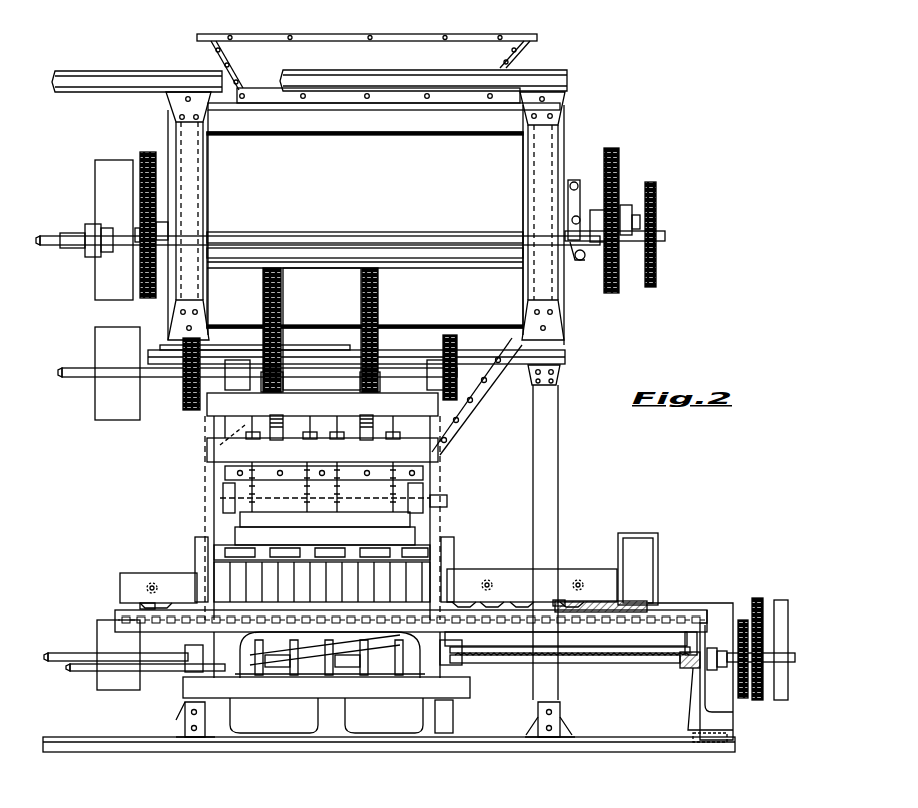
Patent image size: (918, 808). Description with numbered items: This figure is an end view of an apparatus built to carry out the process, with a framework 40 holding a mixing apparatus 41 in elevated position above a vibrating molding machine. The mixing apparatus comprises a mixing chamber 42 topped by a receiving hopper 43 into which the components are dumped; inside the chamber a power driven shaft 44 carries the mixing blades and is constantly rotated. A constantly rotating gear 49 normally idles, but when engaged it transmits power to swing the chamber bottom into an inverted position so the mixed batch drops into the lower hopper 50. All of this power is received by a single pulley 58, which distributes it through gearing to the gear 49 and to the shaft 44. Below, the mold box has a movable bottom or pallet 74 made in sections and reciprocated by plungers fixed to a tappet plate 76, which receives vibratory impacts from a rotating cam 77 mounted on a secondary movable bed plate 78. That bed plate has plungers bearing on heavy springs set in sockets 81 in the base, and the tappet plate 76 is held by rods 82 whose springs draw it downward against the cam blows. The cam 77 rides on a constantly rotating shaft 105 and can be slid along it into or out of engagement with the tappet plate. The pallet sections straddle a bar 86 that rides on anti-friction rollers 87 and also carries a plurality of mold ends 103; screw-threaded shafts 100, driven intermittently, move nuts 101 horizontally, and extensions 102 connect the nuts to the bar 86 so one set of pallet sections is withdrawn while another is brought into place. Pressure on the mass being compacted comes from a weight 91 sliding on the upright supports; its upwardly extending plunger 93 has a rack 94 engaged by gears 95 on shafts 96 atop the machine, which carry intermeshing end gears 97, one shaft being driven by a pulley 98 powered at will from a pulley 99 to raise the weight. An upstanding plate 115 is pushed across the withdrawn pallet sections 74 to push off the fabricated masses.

The framework 40 is at (556, 428).
The mixing apparatus 41 is at (565, 138).
The mixing chamber 42 is at (365, 230).
The receiving hopper 43 is at (515, 50).
The power driven shaft 44 is at (138, 230).
The gear 49 is at (620, 152).
The lower hopper 50 is at (450, 428).
The pulley 58 is at (112, 162).
The pallet 74 is at (132, 600).
The tappet plate 76 is at (332, 638).
The rotating cam 77 is at (275, 668).
The movable bed plate 78 is at (470, 688).
The sockets 81 is at (250, 715).
The rods 82 is at (345, 672).
The bar 86 is at (655, 598).
The anti-friction rollers 87 is at (575, 626).
The weight 91 is at (320, 448).
The plunger 93 is at (365, 329).
The rack 94 is at (258, 285).
The gears 95 is at (283, 372).
The shafts 96 is at (165, 372).
The end gears 97 is at (470, 390).
The pulley 98 is at (110, 420).
The pulley 99 is at (100, 615).
The screw-threaded shafts 100 is at (70, 675).
The nuts 101 is at (690, 668).
The extensions 102 is at (683, 638).
The mold ends 103 is at (195, 545).
The shaft 105 is at (78, 653).
The upstanding plate 115 is at (162, 575).